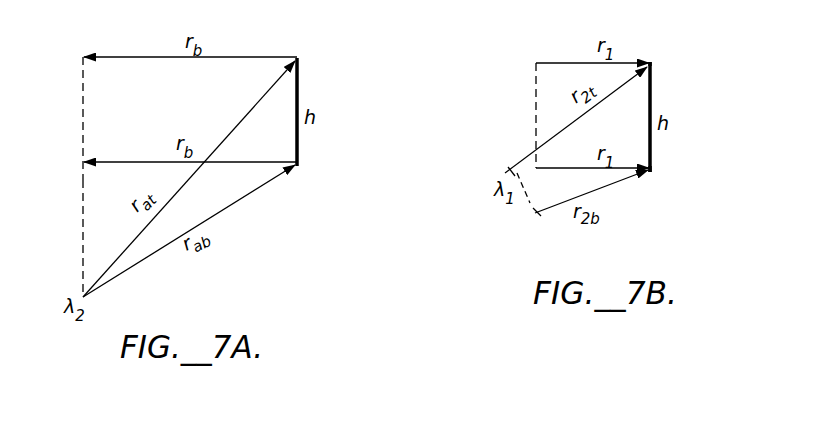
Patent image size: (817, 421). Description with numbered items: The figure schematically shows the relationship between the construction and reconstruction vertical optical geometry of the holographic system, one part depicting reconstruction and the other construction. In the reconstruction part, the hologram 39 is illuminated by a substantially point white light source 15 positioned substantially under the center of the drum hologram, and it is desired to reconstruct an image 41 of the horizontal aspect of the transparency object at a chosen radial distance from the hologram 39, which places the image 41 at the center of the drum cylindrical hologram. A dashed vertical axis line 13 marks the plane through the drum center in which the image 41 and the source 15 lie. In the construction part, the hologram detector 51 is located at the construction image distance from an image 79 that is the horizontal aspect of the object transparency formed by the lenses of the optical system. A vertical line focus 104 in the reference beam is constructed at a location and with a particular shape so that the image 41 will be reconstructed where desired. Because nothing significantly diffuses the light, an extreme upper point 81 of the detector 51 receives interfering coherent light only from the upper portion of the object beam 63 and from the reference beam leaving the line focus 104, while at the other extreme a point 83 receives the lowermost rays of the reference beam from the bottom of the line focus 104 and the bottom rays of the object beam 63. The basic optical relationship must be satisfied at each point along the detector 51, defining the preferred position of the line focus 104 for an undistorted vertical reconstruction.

In FIG. 7A, the axis of rotation 13 is at (82, 220).
In FIG. 7A, the point white light source 15 is at (86, 298).
In FIG. 7A, the hologram 39 is at (299, 77).
In FIG. 7A, the image 41 is at (82, 108).
In FIG. 7B, the hologram detector 51 is at (653, 89).
In FIG. 7B, the object beam 63 is at (558, 71).
In FIG. 7B, the image 79 is at (534, 88).
In FIG. 7B, the upper point of hologram detector 81 is at (652, 65).
In FIG. 7B, the lower point of hologram detector 83 is at (651, 169).
In FIG. 7B, the vertical line focus 104 is at (530, 205).